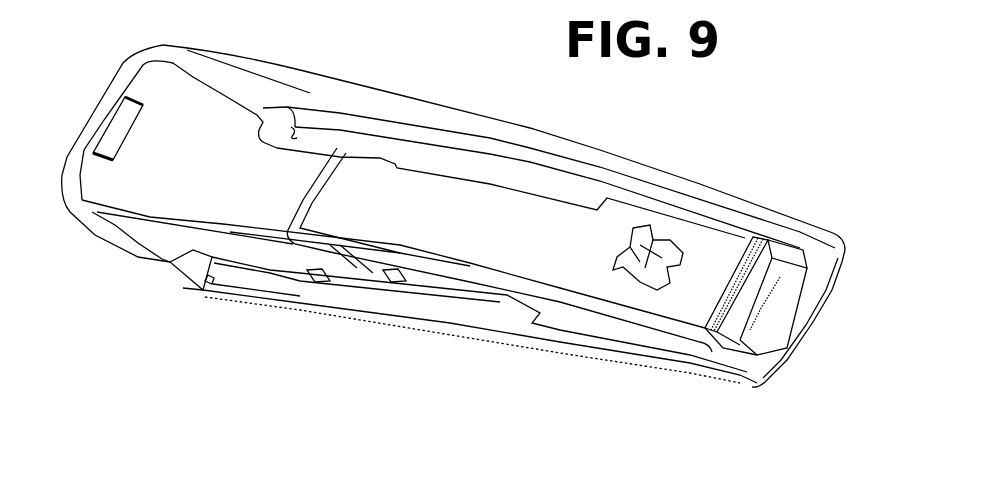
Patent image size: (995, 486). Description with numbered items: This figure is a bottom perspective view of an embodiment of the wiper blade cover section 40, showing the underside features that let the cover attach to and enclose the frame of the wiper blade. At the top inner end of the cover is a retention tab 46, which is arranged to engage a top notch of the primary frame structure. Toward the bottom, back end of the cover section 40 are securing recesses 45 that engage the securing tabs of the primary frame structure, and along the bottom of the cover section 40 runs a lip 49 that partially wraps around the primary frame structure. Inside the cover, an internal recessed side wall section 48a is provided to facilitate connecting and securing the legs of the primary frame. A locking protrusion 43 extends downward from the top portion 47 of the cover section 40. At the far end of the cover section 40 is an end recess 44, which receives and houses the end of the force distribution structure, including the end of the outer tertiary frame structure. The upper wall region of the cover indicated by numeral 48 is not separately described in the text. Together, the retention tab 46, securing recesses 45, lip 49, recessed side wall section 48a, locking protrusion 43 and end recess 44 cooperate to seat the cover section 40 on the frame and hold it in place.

The wiper blade cover section 40 is at (373, 72).
The locking protrusion 43 is at (677, 247).
The end recess 44 is at (787, 303).
The securing recesses 45 is at (297, 132).
The retention tab 46 is at (113, 139).
The top portion 47 is at (137, 167).
The top wall 48 is at (307, 97).
The internal recessed side wall section 48a is at (162, 232).
The lip 49 is at (347, 297).